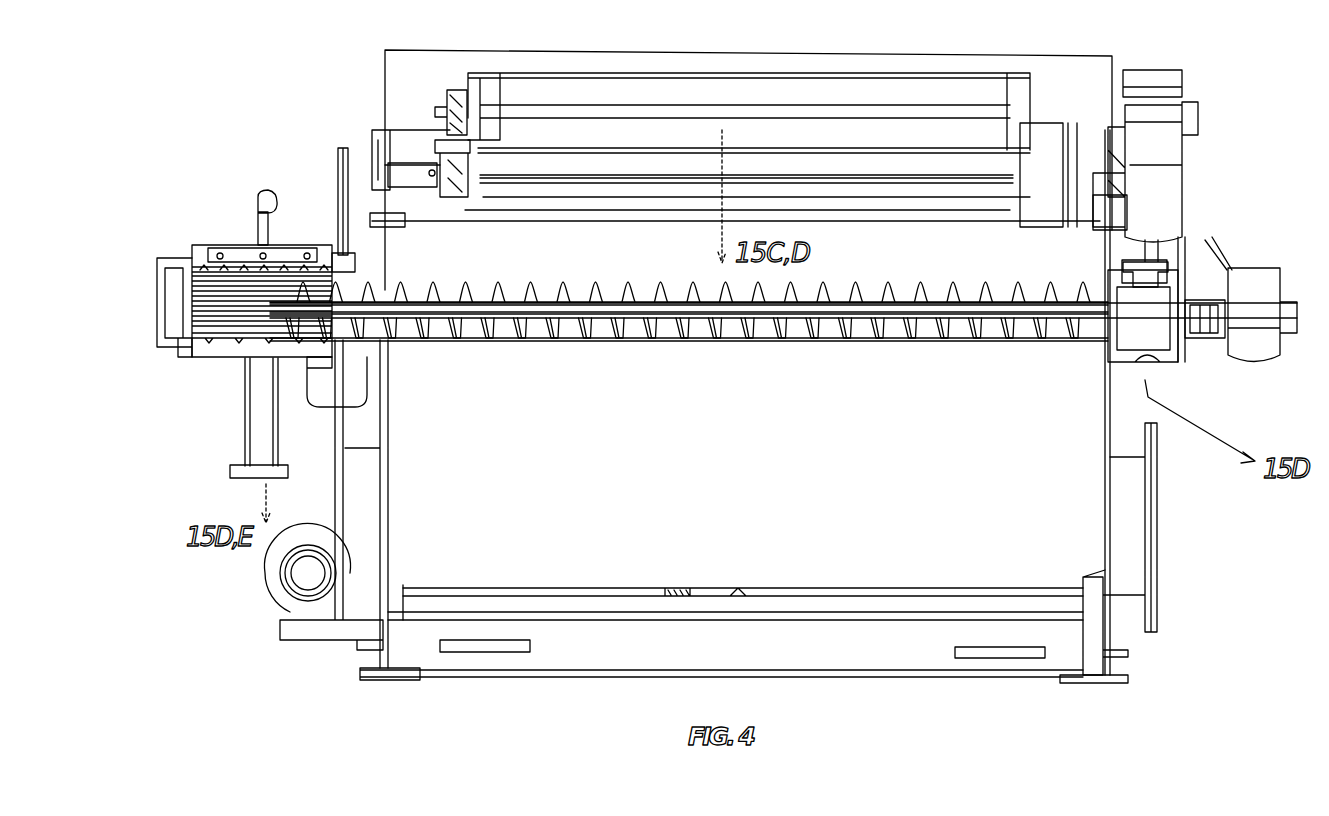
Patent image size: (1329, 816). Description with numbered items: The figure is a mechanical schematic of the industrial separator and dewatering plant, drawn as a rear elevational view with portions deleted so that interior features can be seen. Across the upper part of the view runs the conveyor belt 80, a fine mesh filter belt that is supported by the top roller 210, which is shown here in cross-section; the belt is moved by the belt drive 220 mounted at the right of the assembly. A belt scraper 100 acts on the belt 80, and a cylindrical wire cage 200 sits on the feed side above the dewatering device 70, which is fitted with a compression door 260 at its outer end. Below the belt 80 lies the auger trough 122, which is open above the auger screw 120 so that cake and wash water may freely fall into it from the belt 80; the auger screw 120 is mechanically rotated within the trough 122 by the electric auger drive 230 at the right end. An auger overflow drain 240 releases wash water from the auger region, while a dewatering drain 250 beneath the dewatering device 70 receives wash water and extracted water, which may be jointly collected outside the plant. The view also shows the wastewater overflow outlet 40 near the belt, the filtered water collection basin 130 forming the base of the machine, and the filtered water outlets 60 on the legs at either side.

The conveyor belt 80 is at (717, 72).
The top roller 210 is at (465, 83).
The belt drive 220 is at (1163, 83).
The wastewater overflow outlet 40 is at (360, 203).
The cylindrical wire cage 200 is at (252, 288).
The dewatering device 70 is at (208, 246).
The belt scraper 100 is at (455, 192).
The compression door 260 is at (165, 343).
The auger screw 120 is at (598, 343).
The auger trough 122 is at (749, 343).
The auger overflow drain 240 is at (1148, 372).
The auger drive 230 is at (1258, 368).
The dewatering drain 250 is at (262, 425).
The filtered water outlet 60 is at (362, 557).
The filtered water collection basin 130 is at (813, 540).